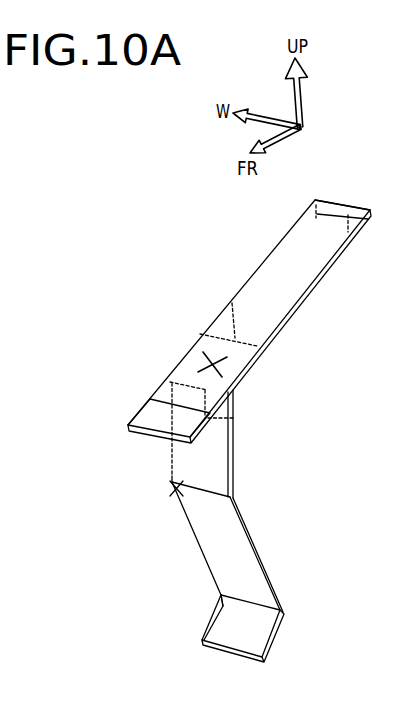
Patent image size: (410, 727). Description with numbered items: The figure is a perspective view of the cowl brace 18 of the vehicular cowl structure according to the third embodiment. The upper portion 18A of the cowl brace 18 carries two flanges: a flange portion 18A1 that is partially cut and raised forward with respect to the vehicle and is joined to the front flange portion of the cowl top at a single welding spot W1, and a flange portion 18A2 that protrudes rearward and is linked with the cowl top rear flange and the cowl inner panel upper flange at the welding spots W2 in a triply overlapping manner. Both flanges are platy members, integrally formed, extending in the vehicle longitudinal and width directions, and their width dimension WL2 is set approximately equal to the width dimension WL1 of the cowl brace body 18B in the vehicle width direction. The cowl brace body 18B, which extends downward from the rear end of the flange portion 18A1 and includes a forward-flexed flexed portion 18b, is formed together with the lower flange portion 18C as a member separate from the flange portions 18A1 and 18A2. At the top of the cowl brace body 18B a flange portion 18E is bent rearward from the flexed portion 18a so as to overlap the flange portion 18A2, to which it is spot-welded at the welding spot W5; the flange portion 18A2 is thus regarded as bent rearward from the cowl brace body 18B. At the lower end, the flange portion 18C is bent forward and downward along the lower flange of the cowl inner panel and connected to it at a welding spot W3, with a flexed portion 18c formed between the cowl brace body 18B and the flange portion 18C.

The cowl brace 18 is at (158, 318).
The upper portion 18A is at (283, 300).
The flange portion 18A1 is at (154, 413).
The flange portion 18A2 is at (368, 212).
The flange portion 18E is at (232, 303).
The flexed portion 18a is at (233, 418).
The cowl brace body 18B is at (215, 465).
The flexed portion 18b is at (178, 489).
The flange portion 18C is at (260, 635).
The flexed portion 18c is at (220, 598).
The welding spot W1 is at (160, 412).
The welding spots W2 is at (316, 198).
The welding spot W3 is at (247, 623).
The welding spot W5 is at (214, 350).
The width dimension WL1 is at (228, 500).
The width dimension WL2 is at (370, 209).